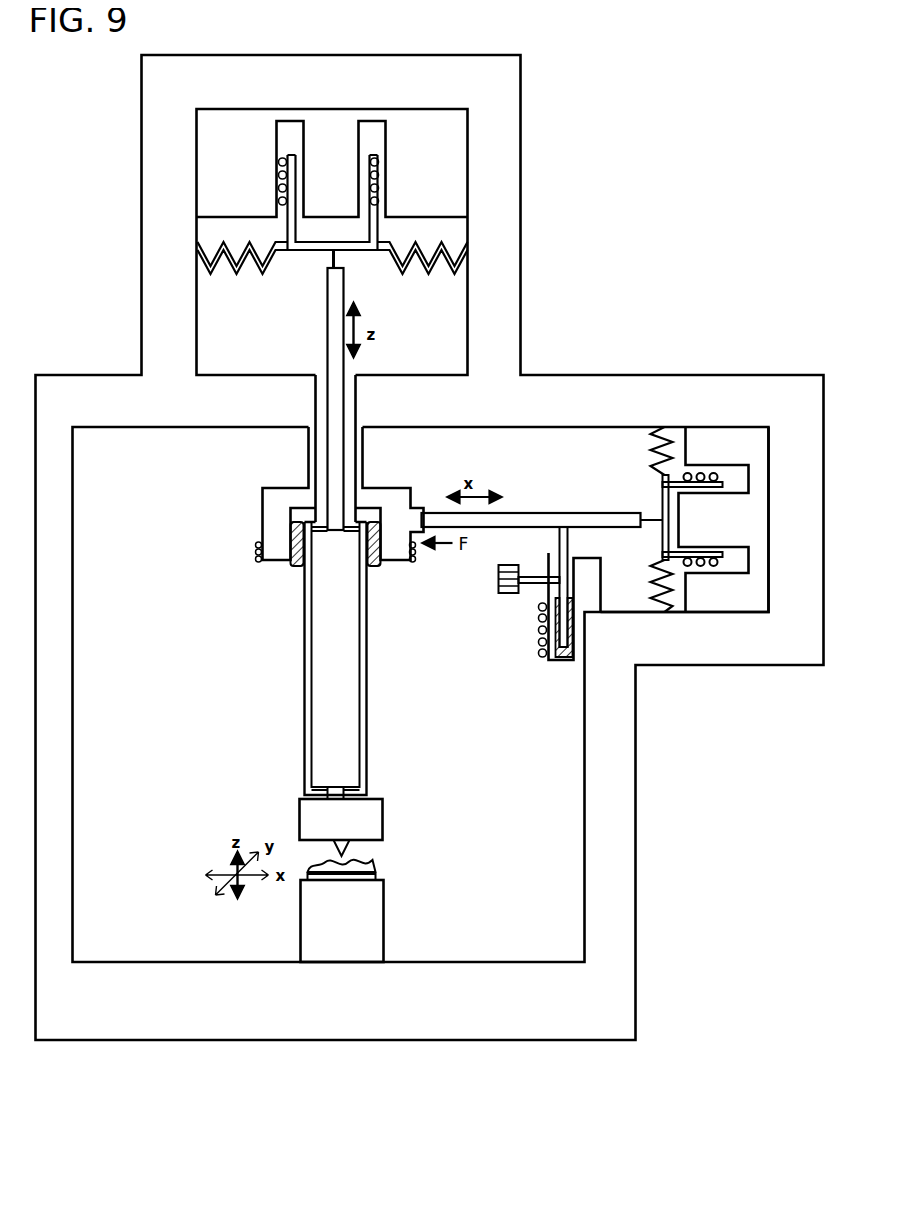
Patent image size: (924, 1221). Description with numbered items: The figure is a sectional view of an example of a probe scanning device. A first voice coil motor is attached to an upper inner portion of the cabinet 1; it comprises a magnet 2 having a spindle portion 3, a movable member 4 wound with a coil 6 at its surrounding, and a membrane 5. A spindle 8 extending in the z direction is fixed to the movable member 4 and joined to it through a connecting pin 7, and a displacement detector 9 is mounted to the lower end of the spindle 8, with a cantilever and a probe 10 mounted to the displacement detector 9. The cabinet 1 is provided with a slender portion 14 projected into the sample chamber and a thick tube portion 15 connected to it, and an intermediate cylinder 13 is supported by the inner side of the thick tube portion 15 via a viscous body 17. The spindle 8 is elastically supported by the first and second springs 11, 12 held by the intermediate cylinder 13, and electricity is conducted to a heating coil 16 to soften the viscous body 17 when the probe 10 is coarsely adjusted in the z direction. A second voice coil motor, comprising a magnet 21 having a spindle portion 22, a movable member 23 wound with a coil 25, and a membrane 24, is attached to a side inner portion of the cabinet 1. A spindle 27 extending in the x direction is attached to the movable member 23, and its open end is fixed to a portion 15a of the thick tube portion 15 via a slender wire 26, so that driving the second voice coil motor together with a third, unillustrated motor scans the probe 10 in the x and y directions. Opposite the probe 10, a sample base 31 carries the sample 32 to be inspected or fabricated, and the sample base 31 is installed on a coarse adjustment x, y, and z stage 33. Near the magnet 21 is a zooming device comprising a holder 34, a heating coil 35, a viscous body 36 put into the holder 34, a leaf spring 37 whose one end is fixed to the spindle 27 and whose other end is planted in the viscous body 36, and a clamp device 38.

The cabinet 1 is at (500, 97).
The magnet 2 is at (445, 180).
The spindle portion 3 is at (330, 178).
The movable member 4 is at (283, 157).
The membrane 5 is at (447, 270).
The coil 6 is at (280, 190).
The connecting pin 7 is at (332, 262).
The spindle 8 is at (327, 350).
The displacement detector 9 is at (378, 820).
The probe 10 is at (352, 846).
The first spring 11 is at (352, 538).
The second spring 12 is at (355, 785).
The intermediate cylinder 13 is at (366, 690).
The slender portion 14 is at (315, 455).
The thick tube portion 15 is at (268, 503).
The portion of the thick tube portion 15a is at (418, 497).
The heating coil 16 is at (255, 552).
The viscous body 17 is at (295, 570).
The magnet 21 is at (717, 440).
The spindle portion 22 is at (703, 520).
The movable member 23 is at (662, 500).
The membrane 24 is at (650, 435).
The coil 25 is at (700, 565).
The slender wire 26 is at (648, 527).
The spindle 27 is at (536, 513).
The sample base 31 is at (378, 880).
The sample 32 is at (375, 866).
The coarse adjustment x, y, and z stage 33 is at (322, 929).
The holder 34 is at (565, 662).
The heating coil 35 is at (538, 628).
The viscous body 36 is at (548, 665).
The leaf spring 37 is at (559, 538).
The clamp device 38 is at (497, 580).